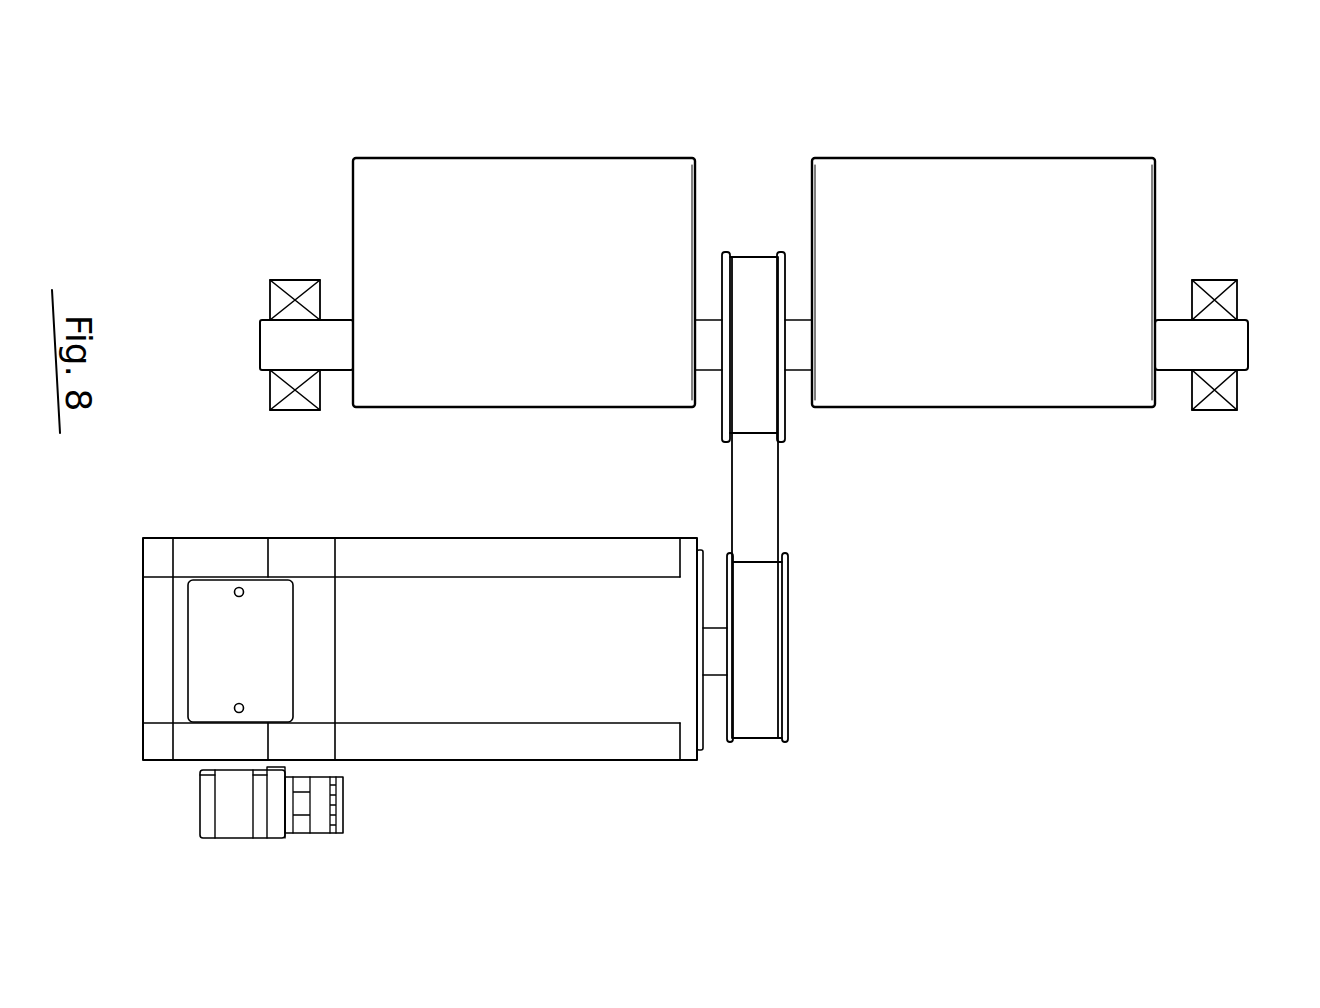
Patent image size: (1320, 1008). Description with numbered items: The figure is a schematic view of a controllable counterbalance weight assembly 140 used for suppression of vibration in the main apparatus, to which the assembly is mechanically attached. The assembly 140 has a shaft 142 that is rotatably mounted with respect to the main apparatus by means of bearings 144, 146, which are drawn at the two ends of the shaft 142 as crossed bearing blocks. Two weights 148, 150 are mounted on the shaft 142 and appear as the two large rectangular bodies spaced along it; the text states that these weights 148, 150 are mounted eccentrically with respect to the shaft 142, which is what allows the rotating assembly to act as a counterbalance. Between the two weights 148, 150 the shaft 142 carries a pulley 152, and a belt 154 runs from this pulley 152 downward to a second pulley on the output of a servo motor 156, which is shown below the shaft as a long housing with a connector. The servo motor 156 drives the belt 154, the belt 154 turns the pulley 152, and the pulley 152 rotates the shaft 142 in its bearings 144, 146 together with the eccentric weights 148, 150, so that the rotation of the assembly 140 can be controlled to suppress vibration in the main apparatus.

The controllable counterbalance weight assembly 140 is at (1033, 622).
The shaft 142 is at (1257, 335).
The bearing 144 is at (1208, 277).
The bearing 146 is at (302, 278).
The weight 148 is at (872, 160).
The weight 150 is at (507, 160).
The pulley 152 is at (713, 272).
The belt 154 is at (768, 500).
The servo motor 156 is at (477, 773).